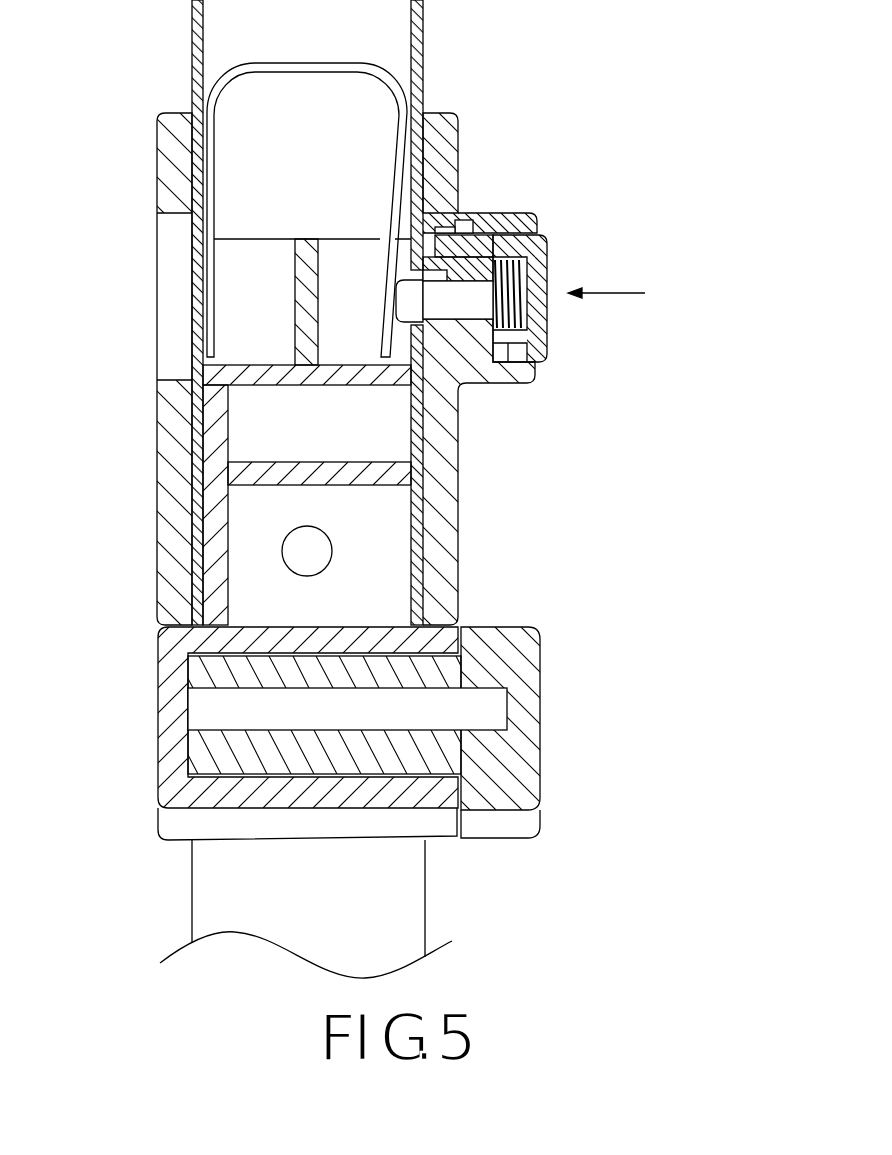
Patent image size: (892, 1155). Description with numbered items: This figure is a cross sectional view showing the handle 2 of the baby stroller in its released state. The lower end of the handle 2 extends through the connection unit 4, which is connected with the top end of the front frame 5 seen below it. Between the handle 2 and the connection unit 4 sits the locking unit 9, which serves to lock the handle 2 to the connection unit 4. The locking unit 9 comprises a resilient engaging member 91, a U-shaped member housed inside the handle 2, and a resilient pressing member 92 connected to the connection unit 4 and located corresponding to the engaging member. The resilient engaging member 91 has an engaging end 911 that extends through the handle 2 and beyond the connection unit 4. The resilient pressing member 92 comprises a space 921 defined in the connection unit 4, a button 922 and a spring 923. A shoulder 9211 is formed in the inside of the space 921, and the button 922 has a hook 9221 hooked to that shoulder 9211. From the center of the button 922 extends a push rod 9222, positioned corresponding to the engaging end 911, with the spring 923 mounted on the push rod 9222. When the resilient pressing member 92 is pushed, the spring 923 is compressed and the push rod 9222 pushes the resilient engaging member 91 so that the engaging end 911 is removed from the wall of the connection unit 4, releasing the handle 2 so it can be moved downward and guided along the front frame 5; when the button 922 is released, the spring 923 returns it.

The handle 2 is at (190, 38).
The connection unit 4 is at (460, 568).
The front frame 5 is at (414, 889).
The locking unit 9 is at (600, 98).
The resilient engaging member 91 is at (378, 66).
The engaging end 911 is at (457, 389).
The resilient pressing member 92 is at (688, 188).
The space 921 is at (515, 208).
The shoulder 9211 is at (463, 225).
The button 922 is at (543, 285).
The hook 9221 is at (443, 174).
The push rod 9222 is at (459, 320).
The spring 923 is at (543, 237).